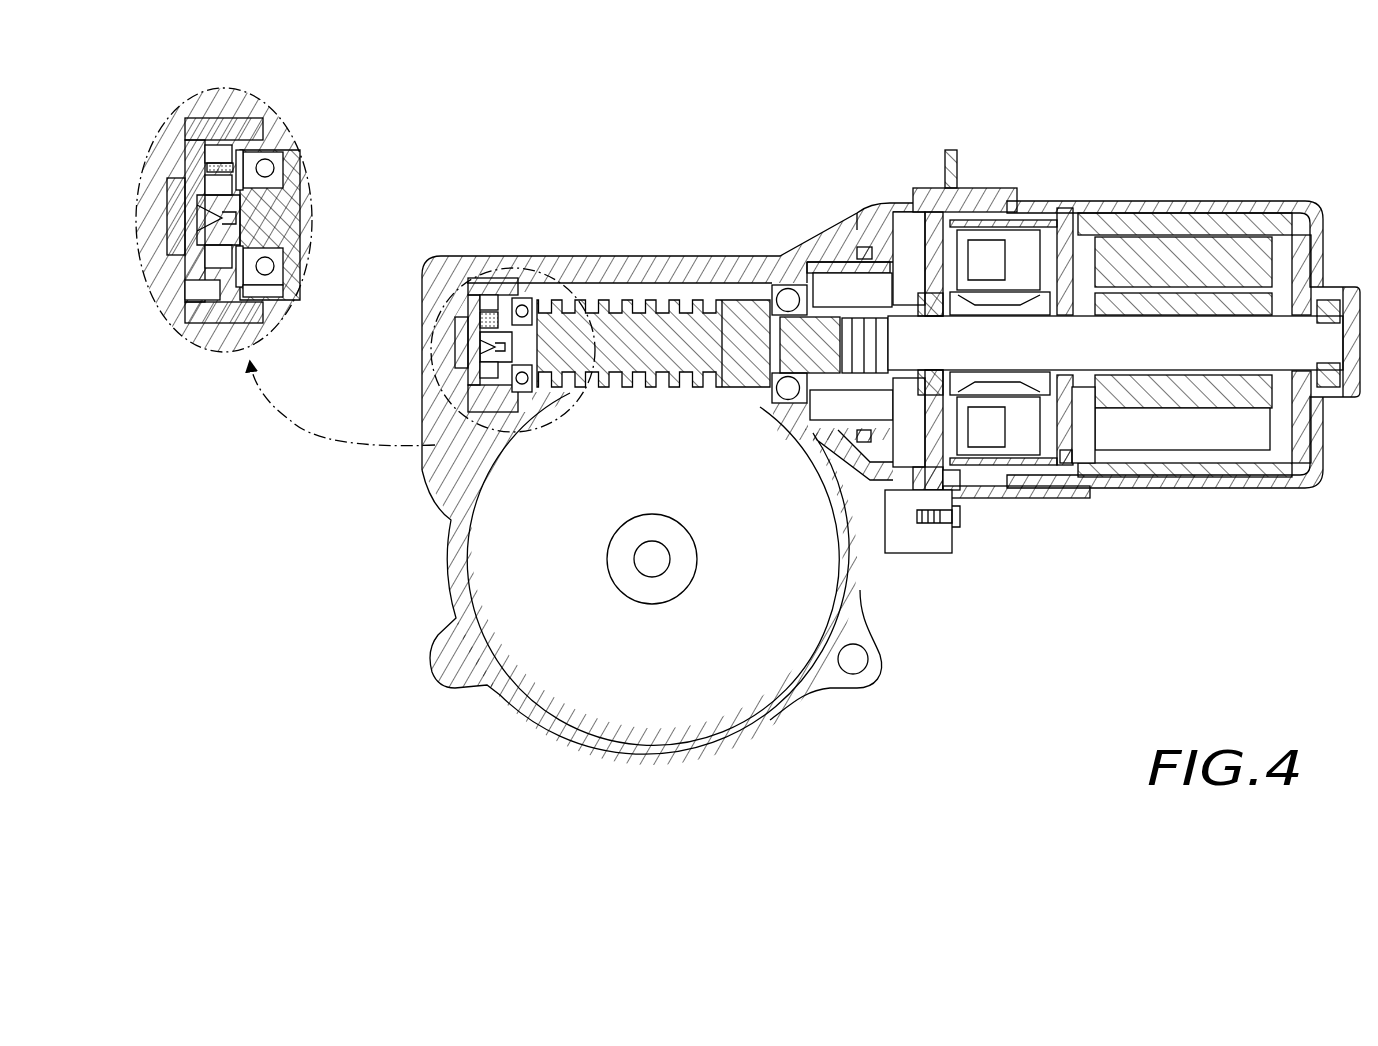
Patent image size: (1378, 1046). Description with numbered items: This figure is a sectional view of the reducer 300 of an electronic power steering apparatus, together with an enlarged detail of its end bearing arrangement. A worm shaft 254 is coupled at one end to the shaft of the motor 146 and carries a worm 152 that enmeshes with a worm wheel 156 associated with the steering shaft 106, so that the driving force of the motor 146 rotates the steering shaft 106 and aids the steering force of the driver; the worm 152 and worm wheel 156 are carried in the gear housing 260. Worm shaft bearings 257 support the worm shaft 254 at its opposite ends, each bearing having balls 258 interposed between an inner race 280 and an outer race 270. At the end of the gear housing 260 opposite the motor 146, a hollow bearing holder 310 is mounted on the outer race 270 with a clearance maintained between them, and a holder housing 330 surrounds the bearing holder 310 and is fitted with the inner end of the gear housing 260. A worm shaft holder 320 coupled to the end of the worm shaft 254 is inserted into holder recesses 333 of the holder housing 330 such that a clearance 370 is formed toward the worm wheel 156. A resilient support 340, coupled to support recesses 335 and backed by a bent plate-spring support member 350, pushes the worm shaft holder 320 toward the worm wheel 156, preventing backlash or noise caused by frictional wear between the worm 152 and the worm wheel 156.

The reducer 300 is at (1262, 84).
The motor 146 is at (1125, 207).
The worm 152 is at (637, 303).
The gear housing 260 is at (693, 257).
The worm shaft bearing 257 is at (786, 290).
The worm shaft 254 is at (500, 287).
The holder housing 330 is at (467, 300).
The support recesses 335 is at (455, 337).
The holder recesses 333 is at (467, 393).
The support member 350 is at (232, 118).
The resilient support 340 is at (187, 165).
The worm shaft holder 320 is at (172, 252).
The clearance 370 is at (197, 310).
The bearing holder 310 is at (280, 292).
The outer race 270 is at (285, 150).
The balls 258 is at (278, 163).
The inner race 280 is at (278, 176).
The steering shaft 106 is at (652, 565).
The worm wheel 156 is at (737, 705).